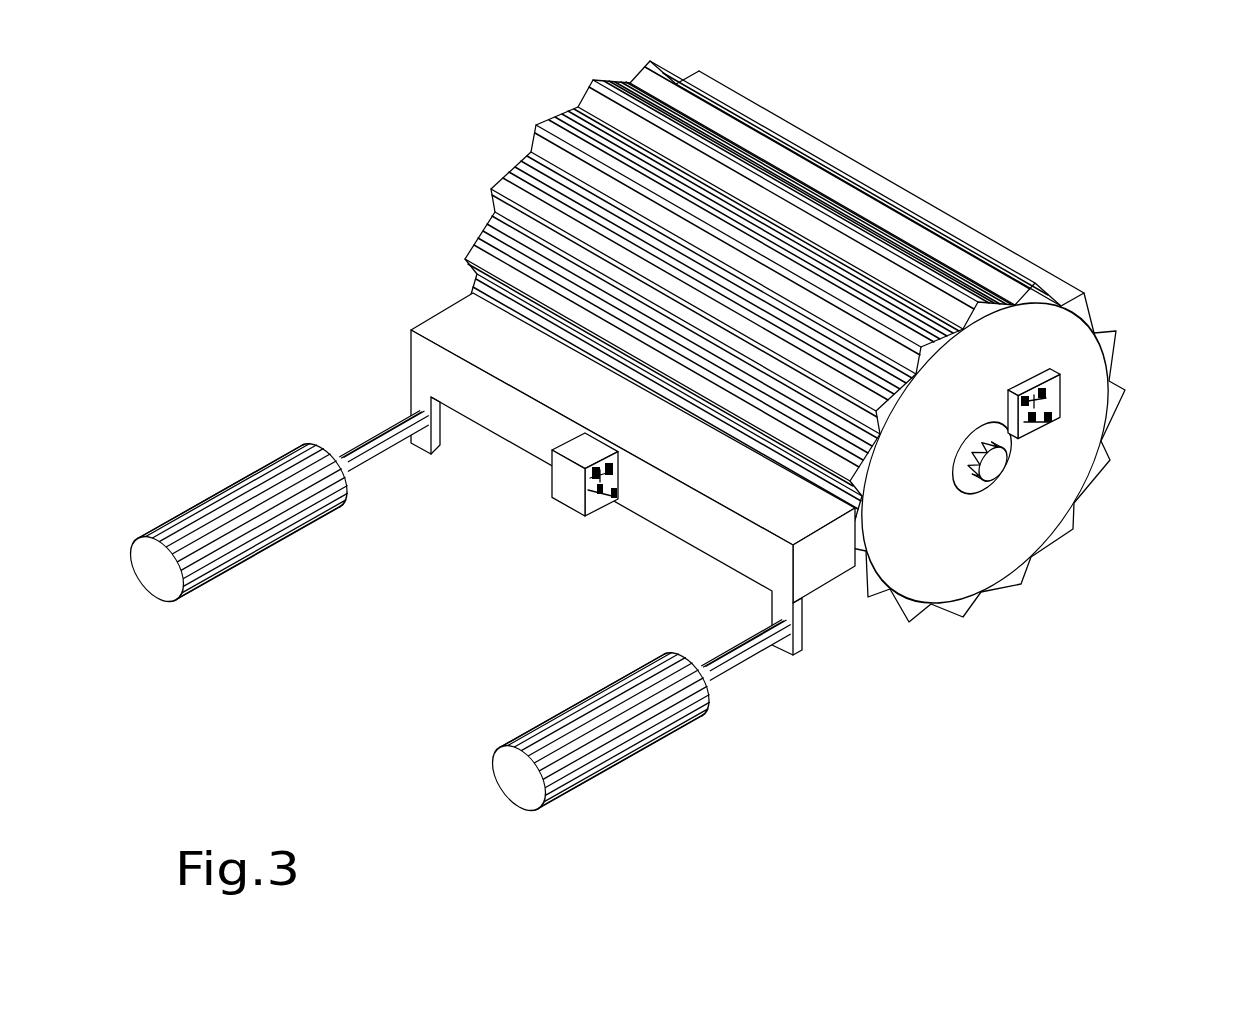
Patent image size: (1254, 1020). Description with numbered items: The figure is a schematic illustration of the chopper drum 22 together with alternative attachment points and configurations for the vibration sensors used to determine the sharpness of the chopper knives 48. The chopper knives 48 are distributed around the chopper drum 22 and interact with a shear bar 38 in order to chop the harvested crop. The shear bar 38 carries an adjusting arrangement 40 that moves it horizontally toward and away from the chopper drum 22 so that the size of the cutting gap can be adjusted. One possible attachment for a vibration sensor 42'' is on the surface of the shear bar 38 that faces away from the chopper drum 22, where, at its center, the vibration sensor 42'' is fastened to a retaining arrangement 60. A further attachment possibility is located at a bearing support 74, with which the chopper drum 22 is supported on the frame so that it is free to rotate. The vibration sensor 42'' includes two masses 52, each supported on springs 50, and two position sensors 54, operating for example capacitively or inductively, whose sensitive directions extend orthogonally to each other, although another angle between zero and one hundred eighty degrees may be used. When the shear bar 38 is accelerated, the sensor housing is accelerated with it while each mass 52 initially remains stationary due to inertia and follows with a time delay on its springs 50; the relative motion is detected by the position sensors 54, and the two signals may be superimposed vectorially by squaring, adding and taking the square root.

The chopper drum 22 is at (537, 178).
The shear bar 38 is at (457, 318).
The adjusting arrangement 40 is at (176, 518).
The vibration sensor 42'' is at (860, 478).
The chopper knives 48 is at (996, 278).
The springs 50 is at (592, 468).
The mass 52 is at (608, 476).
The position sensor 54 is at (605, 500).
The retaining arrangement 60 is at (573, 502).
The bearing support 74 is at (968, 483).